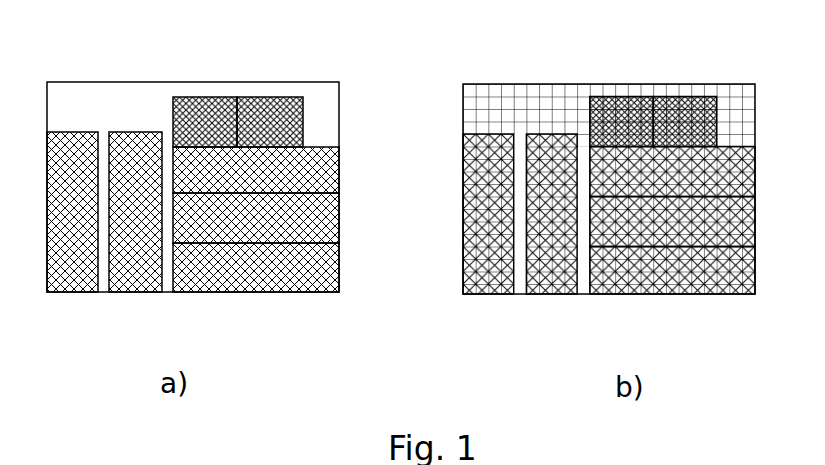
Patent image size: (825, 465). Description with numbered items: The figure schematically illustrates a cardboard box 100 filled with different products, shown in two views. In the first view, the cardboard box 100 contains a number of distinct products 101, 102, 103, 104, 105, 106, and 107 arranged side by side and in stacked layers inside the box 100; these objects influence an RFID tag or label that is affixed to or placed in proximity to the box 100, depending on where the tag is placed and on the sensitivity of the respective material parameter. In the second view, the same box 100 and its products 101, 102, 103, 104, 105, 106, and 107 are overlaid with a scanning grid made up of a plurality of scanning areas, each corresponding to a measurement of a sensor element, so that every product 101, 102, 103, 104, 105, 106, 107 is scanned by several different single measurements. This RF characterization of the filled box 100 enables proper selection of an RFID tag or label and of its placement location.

The cardboard box 100 is at (109, 68).
The product 101 is at (65, 272).
The product 102 is at (135, 272).
The product 103 is at (262, 272).
The product 104 is at (320, 218).
The product 105 is at (312, 160).
The product 106 is at (202, 97).
The product 107 is at (263, 97).